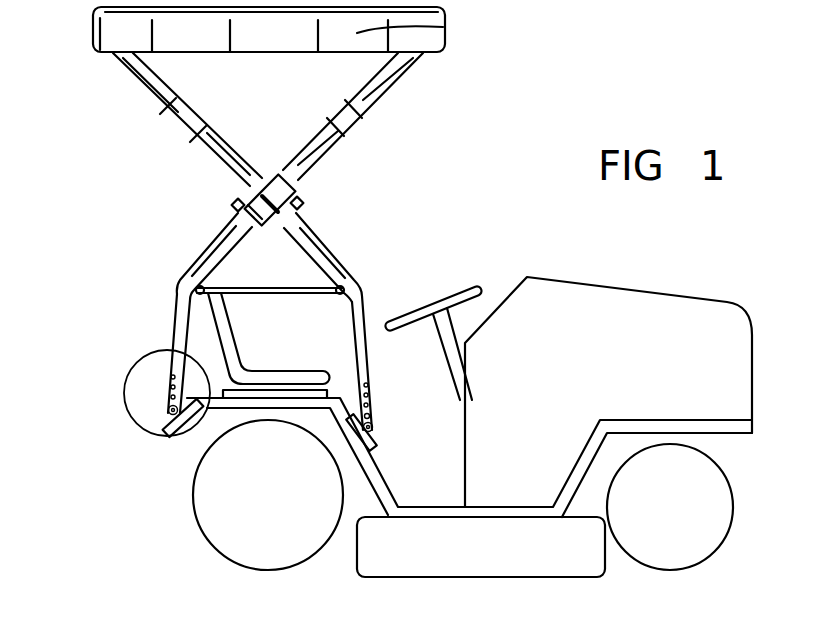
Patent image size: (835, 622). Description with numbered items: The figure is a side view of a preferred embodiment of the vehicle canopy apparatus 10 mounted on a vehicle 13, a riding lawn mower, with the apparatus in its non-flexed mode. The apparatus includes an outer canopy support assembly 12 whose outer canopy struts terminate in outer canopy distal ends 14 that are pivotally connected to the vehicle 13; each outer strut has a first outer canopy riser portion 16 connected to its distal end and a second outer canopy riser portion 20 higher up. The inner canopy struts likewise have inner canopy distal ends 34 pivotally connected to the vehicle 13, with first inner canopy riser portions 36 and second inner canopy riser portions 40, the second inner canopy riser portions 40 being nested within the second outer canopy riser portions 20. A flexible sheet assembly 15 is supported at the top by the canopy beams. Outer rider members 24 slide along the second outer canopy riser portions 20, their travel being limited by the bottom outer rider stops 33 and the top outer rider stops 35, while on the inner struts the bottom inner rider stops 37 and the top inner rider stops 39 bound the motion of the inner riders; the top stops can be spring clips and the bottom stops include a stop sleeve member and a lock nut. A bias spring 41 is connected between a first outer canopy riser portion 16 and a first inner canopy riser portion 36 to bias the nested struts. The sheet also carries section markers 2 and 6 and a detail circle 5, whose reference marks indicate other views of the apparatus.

The section line 2- 2 is at (38, 0).
The detail circle 5 is at (128, 373).
The section line 6- 6 is at (288, 126).
The vehicle canopy apparatus 10 is at (472, 88).
The outer canopy support assembly 12 is at (214, 213).
The vehicle 13 is at (618, 286).
The outer canopy distal ends 14 is at (152, 399).
The flexible sheet assembly 15 is at (447, 33).
The first outer canopy riser portions 16 is at (176, 311).
The second outer canopy riser portions 20 is at (358, 113).
The outer rider members 24 is at (250, 192).
The bottom outer rider stops 33 is at (260, 217).
The inner canopy distal ends 34 is at (413, 409).
The top outer rider stops 35 is at (345, 132).
The first inner canopy riser portions 36 is at (366, 320).
The bottom inner rider stops 37 is at (322, 219).
The top inner rider stops 39 is at (196, 130).
The second inner canopy riser portions 40 is at (167, 107).
The bias springs 41 is at (272, 294).